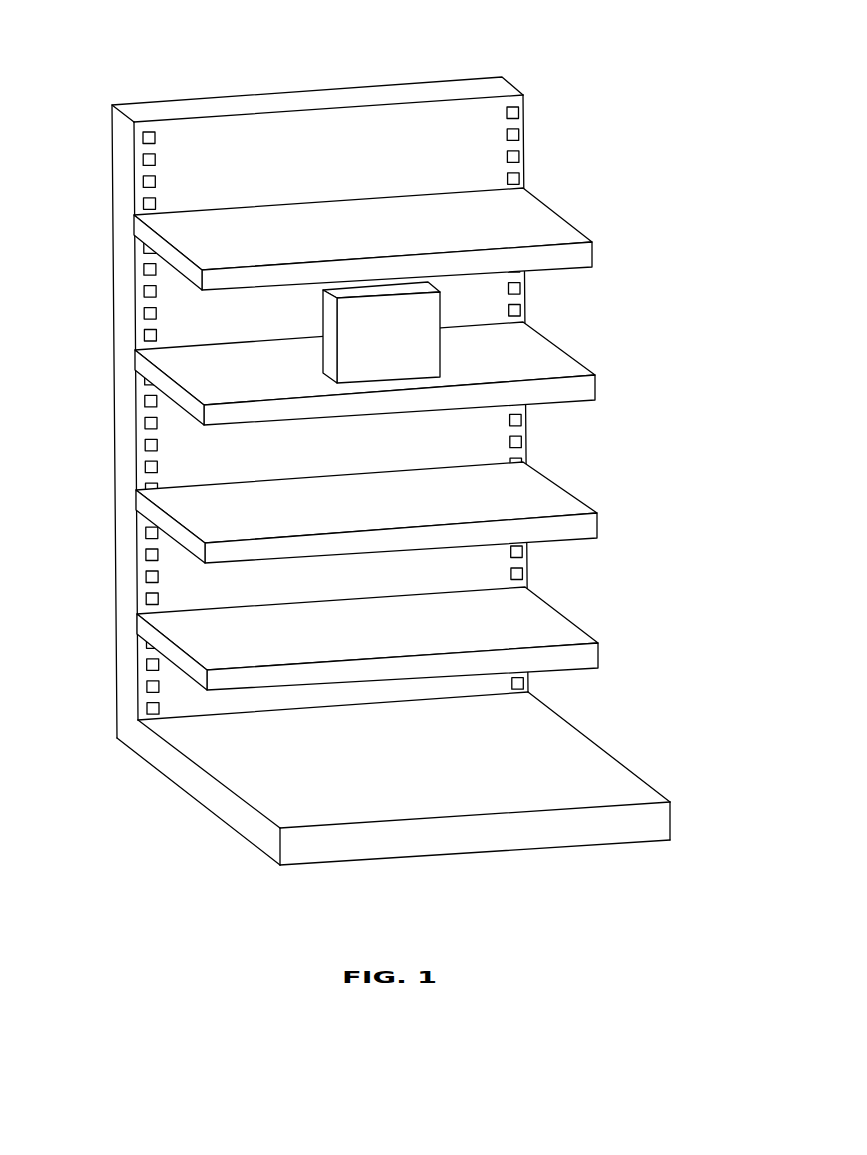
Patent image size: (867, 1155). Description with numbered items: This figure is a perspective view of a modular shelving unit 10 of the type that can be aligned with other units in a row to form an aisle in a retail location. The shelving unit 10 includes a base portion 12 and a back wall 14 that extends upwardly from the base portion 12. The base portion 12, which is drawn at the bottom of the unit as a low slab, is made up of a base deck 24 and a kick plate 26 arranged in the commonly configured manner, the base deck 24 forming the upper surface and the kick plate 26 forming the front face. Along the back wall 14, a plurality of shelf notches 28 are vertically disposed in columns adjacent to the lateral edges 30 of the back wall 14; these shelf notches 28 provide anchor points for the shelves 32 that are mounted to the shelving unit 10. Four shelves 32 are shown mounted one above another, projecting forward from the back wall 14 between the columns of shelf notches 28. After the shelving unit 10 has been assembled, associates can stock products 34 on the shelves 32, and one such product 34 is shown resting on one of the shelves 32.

The modular shelving unit 10 is at (600, 90).
The base portion 12 is at (252, 767).
The back wall 14 is at (245, 147).
The base deck 24 is at (338, 793).
The kick plate 26 is at (480, 827).
The shelf notches 28 is at (143, 181).
The lateral edges 30 is at (135, 538).
The shelves 32 is at (585, 251).
The products 34 is at (382, 313).